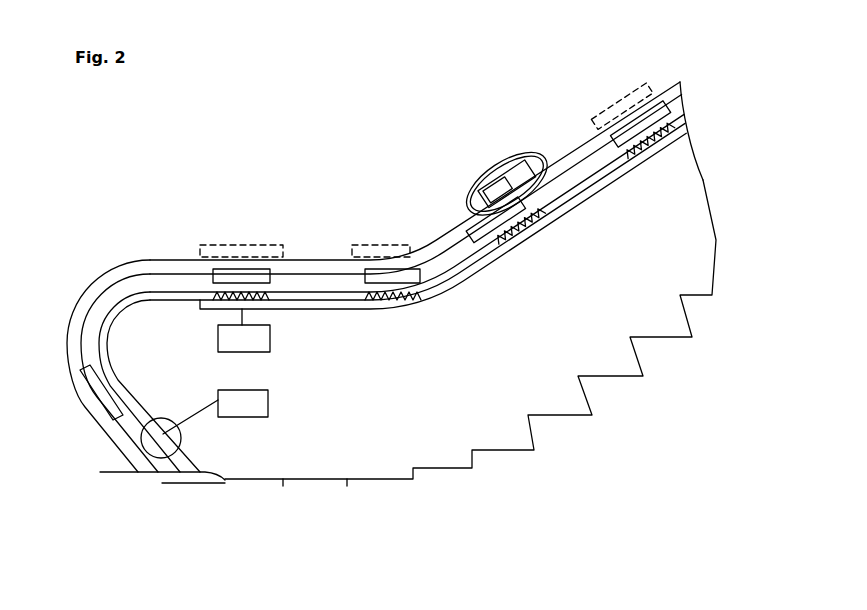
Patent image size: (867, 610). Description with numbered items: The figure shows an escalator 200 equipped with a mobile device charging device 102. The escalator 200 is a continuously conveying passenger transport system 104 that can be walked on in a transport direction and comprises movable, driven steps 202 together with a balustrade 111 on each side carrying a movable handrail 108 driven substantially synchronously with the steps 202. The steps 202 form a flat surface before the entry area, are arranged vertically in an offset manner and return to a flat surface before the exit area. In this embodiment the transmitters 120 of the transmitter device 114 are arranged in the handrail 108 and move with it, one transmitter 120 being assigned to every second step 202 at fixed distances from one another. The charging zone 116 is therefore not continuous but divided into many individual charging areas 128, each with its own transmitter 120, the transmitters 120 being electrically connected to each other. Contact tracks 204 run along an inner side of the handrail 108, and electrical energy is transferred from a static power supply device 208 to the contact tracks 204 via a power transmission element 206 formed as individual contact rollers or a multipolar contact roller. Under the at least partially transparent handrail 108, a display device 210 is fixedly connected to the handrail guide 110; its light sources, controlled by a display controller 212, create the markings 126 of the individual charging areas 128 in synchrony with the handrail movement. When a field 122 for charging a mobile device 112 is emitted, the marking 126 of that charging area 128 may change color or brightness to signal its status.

The mobile device charging device 102 is at (344, 207).
The passenger transport system 104 is at (136, 288).
The escalator 200 is at (96, 147).
The handrail 108 is at (560, 160).
The handrail guide 110 is at (121, 350).
The balustrade 111 is at (500, 403).
The mobile device 112 is at (472, 168).
The transmitter device 114 is at (391, 171).
The contact tracks 204 is at (170, 259).
The charging zone 116 is at (226, 245).
The transmitter 120 is at (354, 305).
The charging area 128 is at (245, 268).
The field 122 is at (486, 163).
The marking 126 is at (266, 299).
The steps 202 is at (252, 479).
The power transmission element 206 is at (181, 437).
The power supply device 208 is at (269, 401).
The display device 210 is at (395, 311).
The display controller 212 is at (269, 341).